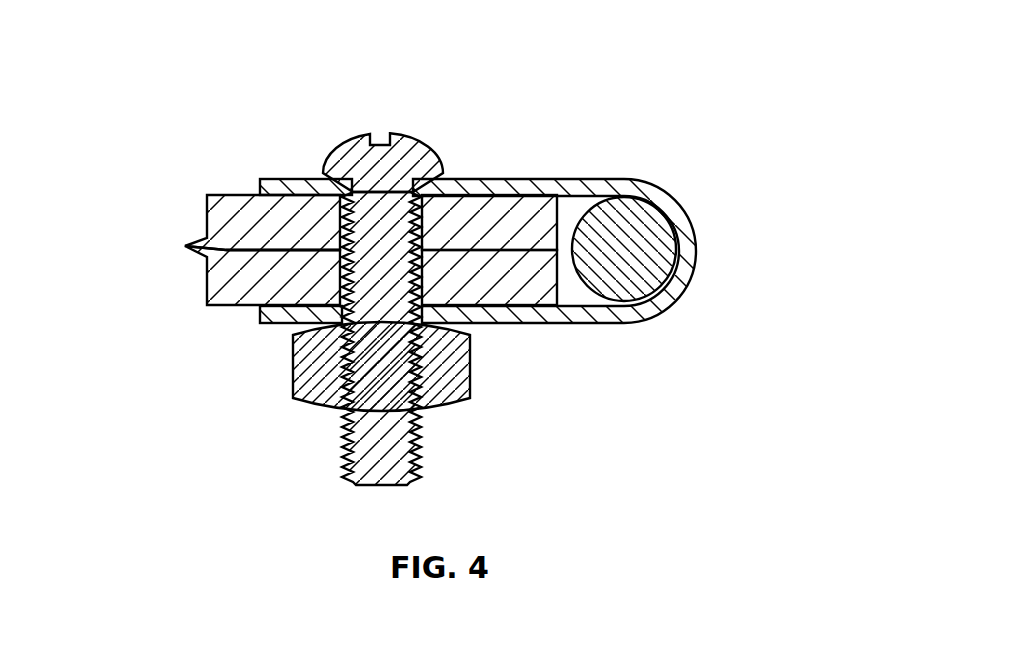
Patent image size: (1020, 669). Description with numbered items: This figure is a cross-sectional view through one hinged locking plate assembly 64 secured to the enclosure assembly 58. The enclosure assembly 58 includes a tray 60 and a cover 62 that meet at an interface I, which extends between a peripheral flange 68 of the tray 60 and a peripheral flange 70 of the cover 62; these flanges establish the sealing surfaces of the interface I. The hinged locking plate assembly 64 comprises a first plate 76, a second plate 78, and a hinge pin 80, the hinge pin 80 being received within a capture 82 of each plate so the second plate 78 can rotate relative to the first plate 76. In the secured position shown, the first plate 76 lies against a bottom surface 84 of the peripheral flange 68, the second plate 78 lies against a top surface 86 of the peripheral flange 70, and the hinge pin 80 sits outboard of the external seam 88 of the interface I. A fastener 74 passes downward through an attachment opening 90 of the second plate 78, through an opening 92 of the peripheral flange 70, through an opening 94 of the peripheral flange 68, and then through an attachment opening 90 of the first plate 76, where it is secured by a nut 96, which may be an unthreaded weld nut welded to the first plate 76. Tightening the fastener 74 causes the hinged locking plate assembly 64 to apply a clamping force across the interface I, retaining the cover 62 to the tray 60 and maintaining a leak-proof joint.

The enclosure assembly 58 is at (590, 52).
The tray 60 is at (203, 281).
The cover 62 is at (203, 214).
The hinged locking plate assembly 64 is at (570, 167).
The peripheral flange 68 is at (232, 292).
The peripheral flange 70 is at (227, 208).
The fastener 74 is at (408, 135).
The first plate 76 is at (287, 325).
The second plate 78 is at (283, 188).
The hinge pin 80 is at (647, 273).
The capture 82 is at (688, 228).
The bottom surface 84 is at (241, 258).
The top surface 86 is at (242, 192).
The external seam 88 is at (560, 236).
The attachment opening 90 is at (318, 178).
The opening 92 is at (422, 212).
The opening 94 is at (422, 277).
The nut 96 is at (448, 390).
The interface I is at (232, 290).